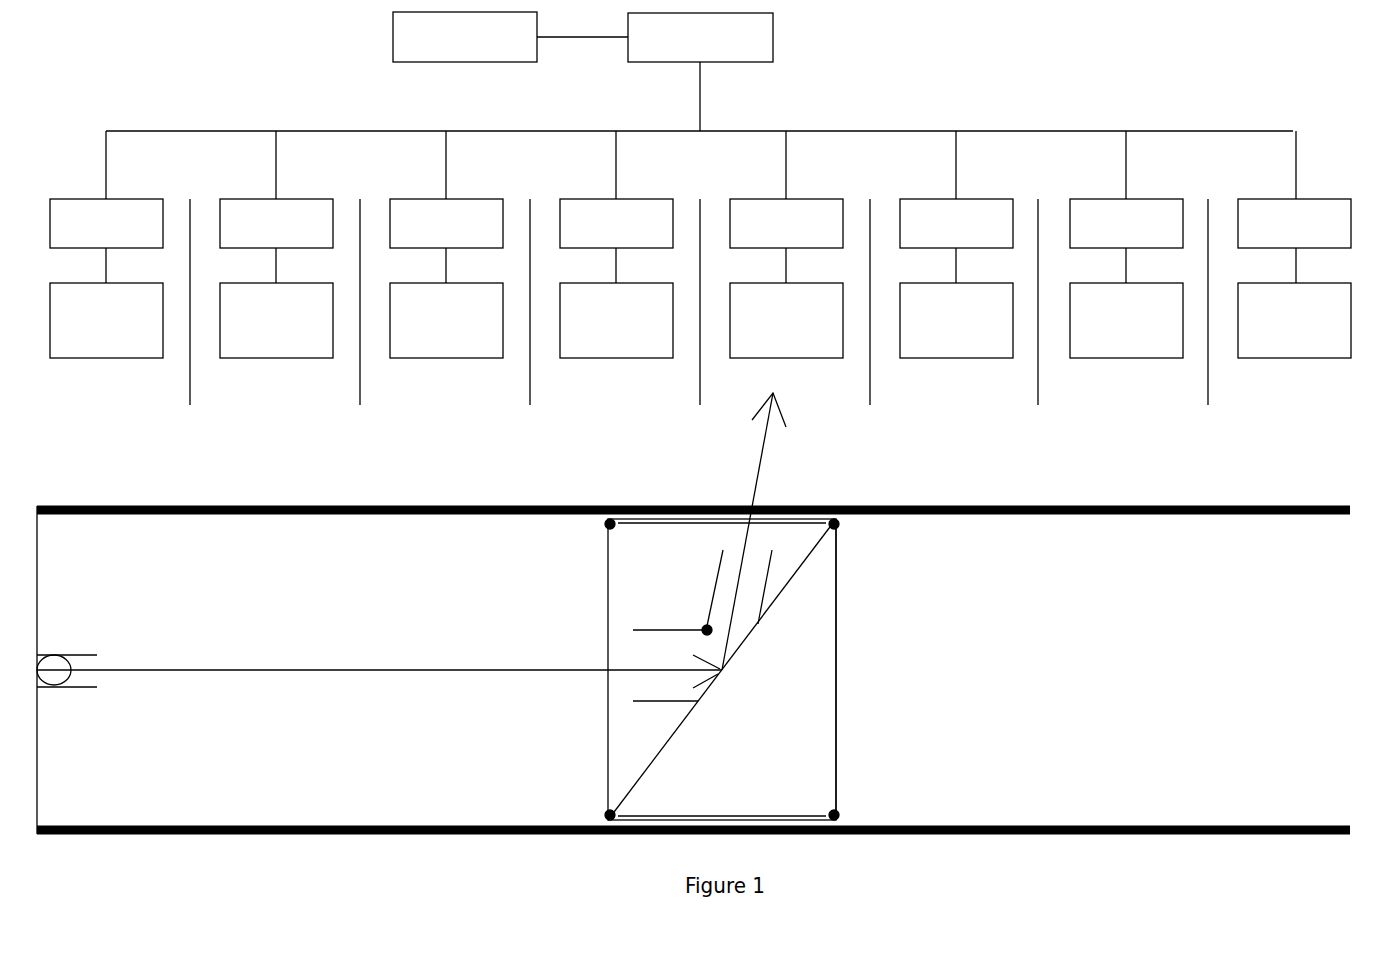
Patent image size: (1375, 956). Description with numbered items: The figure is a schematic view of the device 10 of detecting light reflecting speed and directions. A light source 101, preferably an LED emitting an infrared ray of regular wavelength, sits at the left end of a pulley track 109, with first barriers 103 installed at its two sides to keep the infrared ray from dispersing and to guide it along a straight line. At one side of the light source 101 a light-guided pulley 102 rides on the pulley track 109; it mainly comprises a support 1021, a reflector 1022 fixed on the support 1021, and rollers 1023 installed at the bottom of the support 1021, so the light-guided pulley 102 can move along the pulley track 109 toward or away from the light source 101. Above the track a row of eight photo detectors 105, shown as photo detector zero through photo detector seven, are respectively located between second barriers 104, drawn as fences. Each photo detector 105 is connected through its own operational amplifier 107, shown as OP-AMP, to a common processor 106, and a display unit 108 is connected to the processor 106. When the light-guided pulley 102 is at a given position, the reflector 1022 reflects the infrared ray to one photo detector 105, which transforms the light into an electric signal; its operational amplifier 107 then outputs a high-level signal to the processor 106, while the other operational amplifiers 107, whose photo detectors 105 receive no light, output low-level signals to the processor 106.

The device of detecting light reflecting speed and directions 10 is at (968, 106).
The light source 101 is at (52, 675).
The light-guided pulley 102 is at (794, 669).
The support 1021 is at (837, 670).
The reflector 1022 is at (800, 570).
The rollers 1023 is at (845, 521).
The first barriers 103 is at (85, 655).
The second barriers 104 is at (360, 385).
The photo detectors 105 is at (65, 351).
The processor 106 is at (773, 37).
The operational amplifiers 107 is at (90, 200).
The display unit 108 is at (393, 37).
The pulley track 109 is at (200, 825).